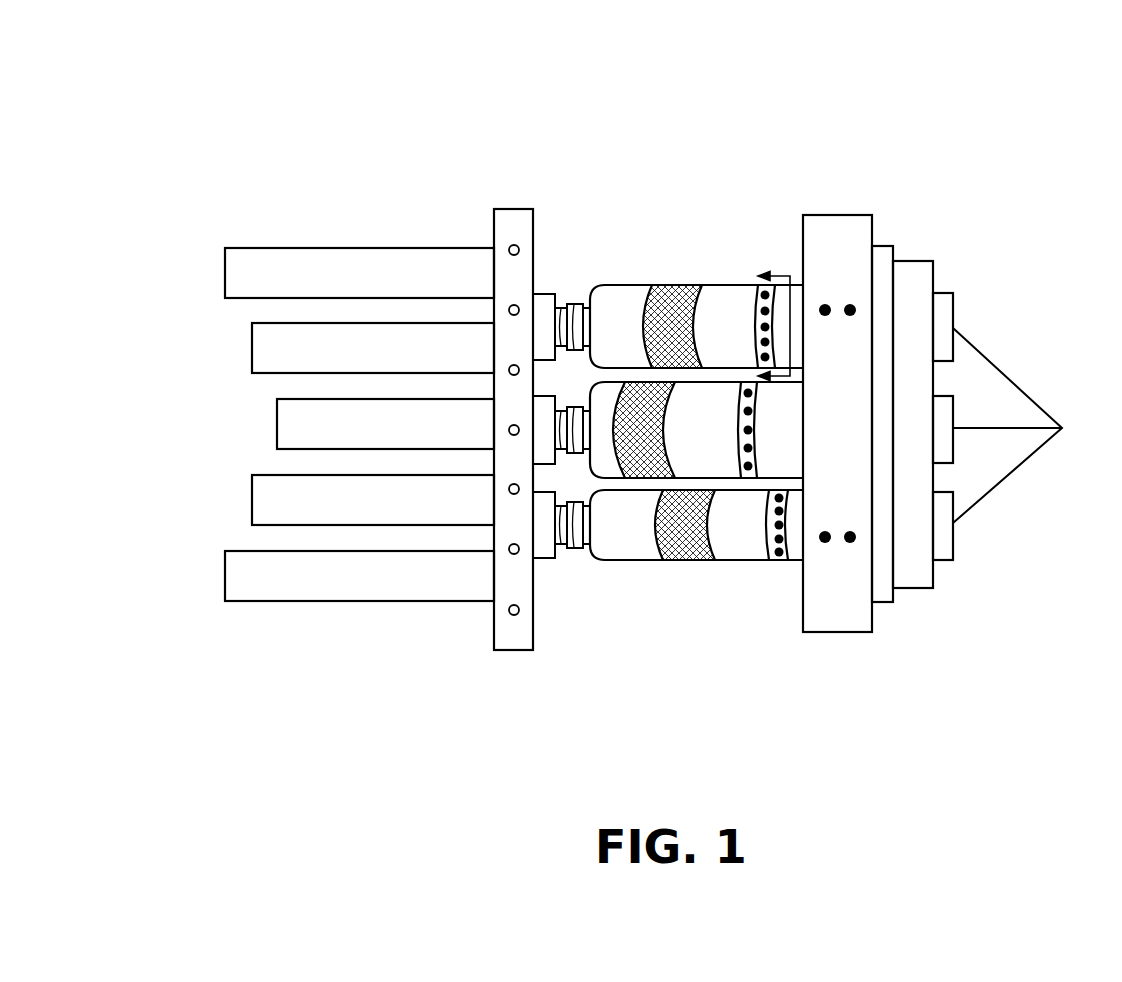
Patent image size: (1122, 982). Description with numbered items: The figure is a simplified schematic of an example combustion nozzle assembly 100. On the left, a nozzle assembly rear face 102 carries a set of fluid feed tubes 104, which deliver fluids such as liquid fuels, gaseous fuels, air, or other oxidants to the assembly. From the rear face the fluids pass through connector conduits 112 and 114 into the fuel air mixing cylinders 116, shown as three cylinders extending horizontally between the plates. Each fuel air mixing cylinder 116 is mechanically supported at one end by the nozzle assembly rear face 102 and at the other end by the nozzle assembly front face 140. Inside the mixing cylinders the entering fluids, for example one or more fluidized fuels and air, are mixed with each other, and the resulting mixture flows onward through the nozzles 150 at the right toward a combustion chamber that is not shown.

The combustion nozzle assembly 100 is at (1000, 83).
The nozzle assembly rear face 102 is at (513, 207).
The fluid feed tubes 104 is at (262, 248).
The connector conduit 112 is at (542, 558).
The connector conduit 114 is at (571, 548).
The fuel air mixing cylinder 116 is at (621, 568).
The nozzle assembly front face 140 is at (837, 213).
The nozzles 150 is at (1027, 425).